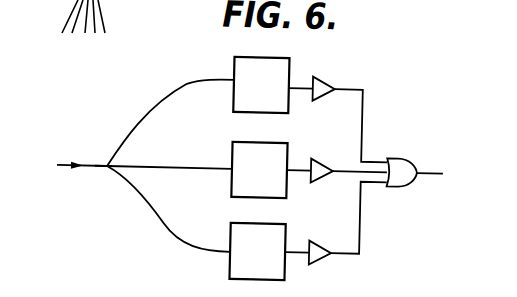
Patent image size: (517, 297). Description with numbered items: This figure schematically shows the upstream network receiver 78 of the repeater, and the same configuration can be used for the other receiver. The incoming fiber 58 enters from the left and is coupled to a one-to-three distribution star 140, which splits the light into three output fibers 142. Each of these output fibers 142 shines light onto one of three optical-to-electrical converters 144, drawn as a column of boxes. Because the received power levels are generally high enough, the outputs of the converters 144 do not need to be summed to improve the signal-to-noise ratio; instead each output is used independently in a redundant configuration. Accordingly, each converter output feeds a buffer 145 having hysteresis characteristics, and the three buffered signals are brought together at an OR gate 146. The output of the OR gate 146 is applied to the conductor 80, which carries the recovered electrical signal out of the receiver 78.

The fiber 58 is at (57, 166).
The upstream network receiver 78 is at (90, 114).
The conductor 80 is at (425, 154).
The 1-to-3 distribution star 140 is at (88, 184).
The output fibers 142 is at (180, 166).
The optical-to-electrical converters 144 is at (288, 93).
The buffers 145 is at (318, 73).
The OR gate 146 is at (400, 179).